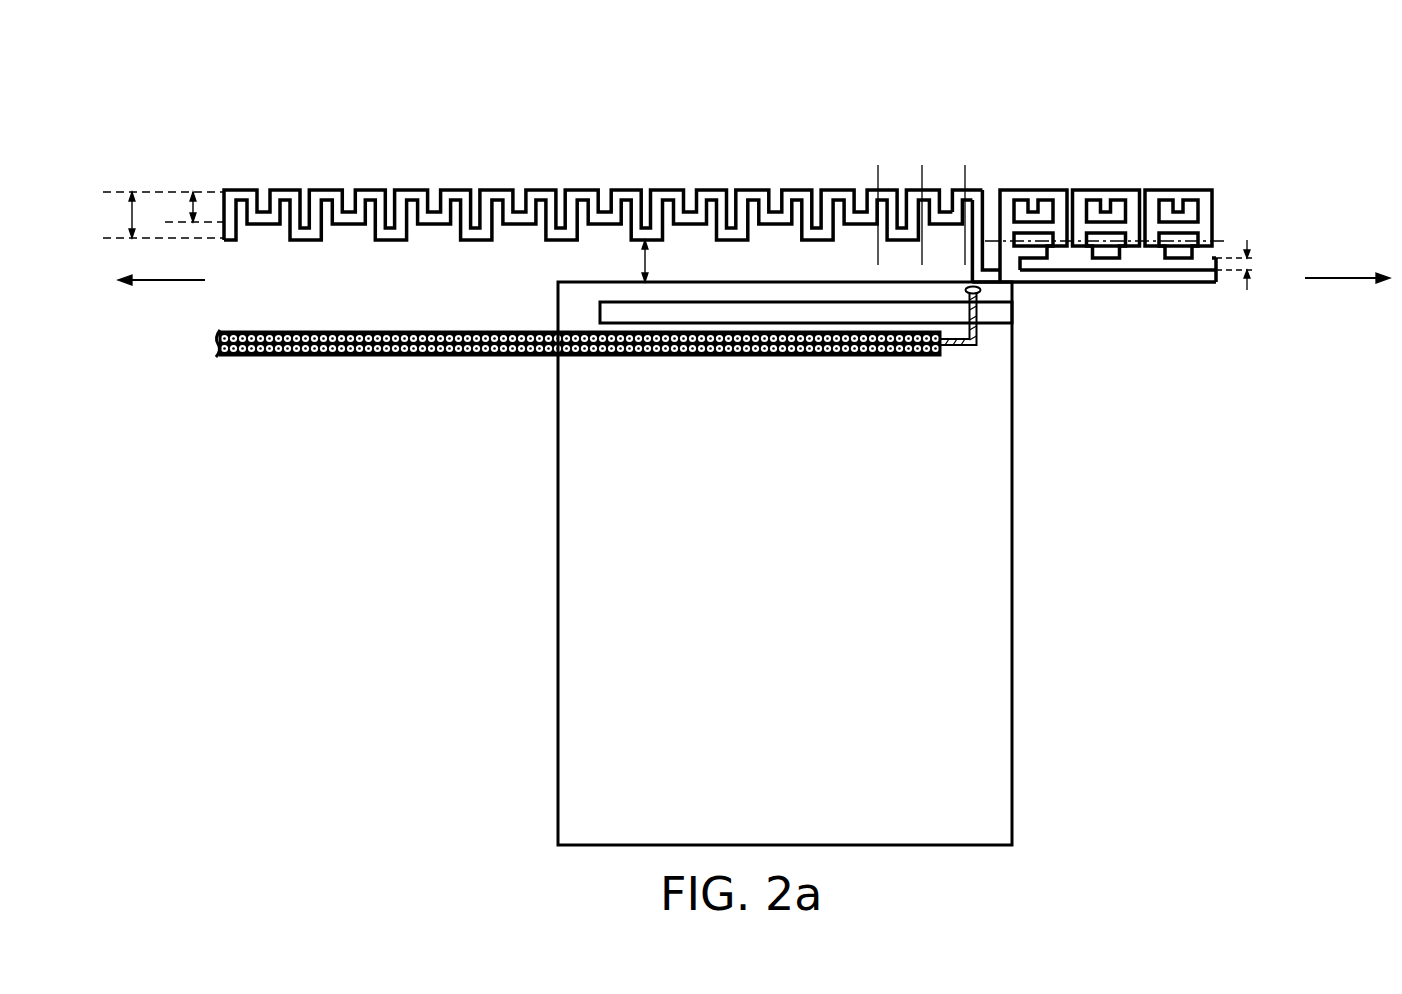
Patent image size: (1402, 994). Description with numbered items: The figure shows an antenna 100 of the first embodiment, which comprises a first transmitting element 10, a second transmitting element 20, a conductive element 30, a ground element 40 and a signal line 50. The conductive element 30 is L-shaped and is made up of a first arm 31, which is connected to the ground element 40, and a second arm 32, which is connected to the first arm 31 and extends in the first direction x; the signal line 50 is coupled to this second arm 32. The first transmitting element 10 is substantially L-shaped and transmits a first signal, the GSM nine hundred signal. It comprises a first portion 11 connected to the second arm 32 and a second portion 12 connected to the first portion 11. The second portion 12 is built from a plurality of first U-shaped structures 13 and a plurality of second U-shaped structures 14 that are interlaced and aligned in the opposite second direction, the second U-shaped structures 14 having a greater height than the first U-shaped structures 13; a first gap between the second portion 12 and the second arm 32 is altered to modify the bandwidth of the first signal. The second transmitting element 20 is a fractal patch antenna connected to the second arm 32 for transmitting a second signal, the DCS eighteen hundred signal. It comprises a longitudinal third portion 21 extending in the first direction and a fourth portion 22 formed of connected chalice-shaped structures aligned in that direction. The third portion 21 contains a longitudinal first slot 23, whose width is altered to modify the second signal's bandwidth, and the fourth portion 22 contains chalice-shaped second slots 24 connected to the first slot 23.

The antenna 100 is at (1290, 92).
The first transmitting element 10 is at (985, 68).
The first portion 11 is at (977, 190).
The second portion 12 is at (957, 108).
The first U-shaped structures 13 is at (942, 190).
The second U-shaped structures 14 is at (887, 190).
The second transmitting element 20 is at (1145, 103).
The third portion 21 is at (1072, 246).
The fourth portion 22 is at (1165, 200).
The first slot 23 is at (1142, 272).
The second slots 24 is at (1215, 208).
The conductive element 30 is at (452, 395).
The first arm 31 is at (582, 313).
The second arm 32 is at (672, 290).
The ground element 40 is at (1000, 580).
The signal line 50 is at (982, 312).